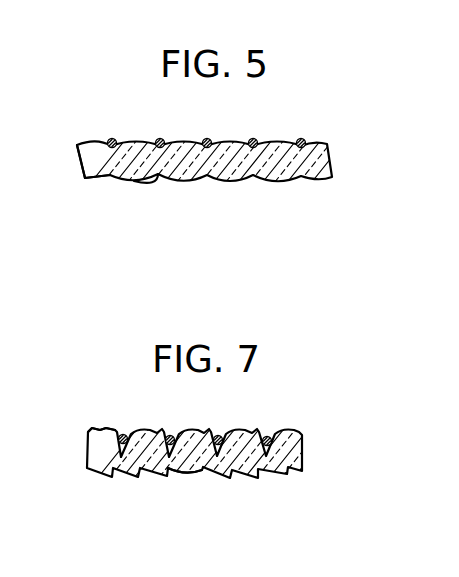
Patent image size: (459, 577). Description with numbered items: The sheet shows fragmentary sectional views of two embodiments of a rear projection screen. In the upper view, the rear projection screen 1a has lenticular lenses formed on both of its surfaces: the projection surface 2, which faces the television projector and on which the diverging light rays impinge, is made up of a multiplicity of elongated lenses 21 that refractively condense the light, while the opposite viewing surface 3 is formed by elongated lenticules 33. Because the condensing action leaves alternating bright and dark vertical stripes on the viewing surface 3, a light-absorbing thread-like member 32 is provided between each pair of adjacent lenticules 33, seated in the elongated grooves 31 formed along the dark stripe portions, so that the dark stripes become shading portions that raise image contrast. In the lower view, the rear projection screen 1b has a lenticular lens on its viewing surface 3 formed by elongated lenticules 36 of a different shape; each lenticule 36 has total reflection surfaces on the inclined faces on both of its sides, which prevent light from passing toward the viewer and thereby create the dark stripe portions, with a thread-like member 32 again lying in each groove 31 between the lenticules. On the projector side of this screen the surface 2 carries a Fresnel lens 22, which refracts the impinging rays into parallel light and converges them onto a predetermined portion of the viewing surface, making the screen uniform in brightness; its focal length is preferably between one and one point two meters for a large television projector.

In FIG. 5, the rear projection screen 1a is at (323, 166).
In FIG. 7, the rear projection screen 1b is at (305, 446).
In FIG. 5, the projection surface 2 is at (175, 182).
In FIG. 5, the elongated lenses 21 is at (102, 179).
In FIG. 7, the Fresnel lens 22 is at (222, 476).
In FIG. 5, the viewing surface 3 is at (277, 138).
In FIG. 5, the elongated grooves 31 is at (112, 138).
In FIG. 7, the elongated grooves 31 is at (129, 431).
In FIG. 5, the thread-like member 32 is at (162, 138).
In FIG. 7, the thread-like member 32 is at (123, 433).
In FIG. 5, the elongated lenticules 33 is at (86, 143).
In FIG. 7, the elongated lenticules 36 is at (95, 432).